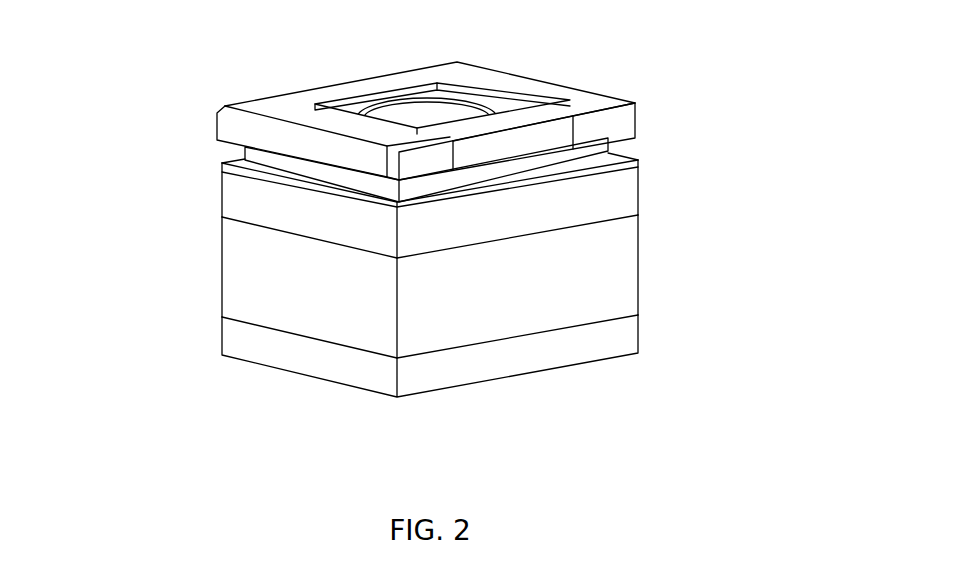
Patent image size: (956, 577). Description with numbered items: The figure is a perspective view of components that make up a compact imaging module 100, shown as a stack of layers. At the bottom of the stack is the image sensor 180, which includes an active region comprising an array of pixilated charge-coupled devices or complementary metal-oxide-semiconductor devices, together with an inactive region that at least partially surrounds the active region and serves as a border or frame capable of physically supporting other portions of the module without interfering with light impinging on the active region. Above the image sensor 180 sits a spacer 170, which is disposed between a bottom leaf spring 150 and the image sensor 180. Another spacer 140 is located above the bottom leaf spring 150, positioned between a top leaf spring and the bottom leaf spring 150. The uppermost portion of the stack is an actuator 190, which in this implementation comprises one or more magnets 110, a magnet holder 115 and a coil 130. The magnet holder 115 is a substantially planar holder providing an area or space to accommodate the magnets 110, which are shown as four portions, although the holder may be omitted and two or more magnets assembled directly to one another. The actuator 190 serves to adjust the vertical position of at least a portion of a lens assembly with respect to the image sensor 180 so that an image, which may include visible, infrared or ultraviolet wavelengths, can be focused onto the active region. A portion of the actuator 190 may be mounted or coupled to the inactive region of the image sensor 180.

The compact imaging module 100 is at (840, 48).
The magnets 110 is at (597, 92).
The magnet holder 115 is at (636, 128).
The coil 130 is at (243, 153).
The spacer 140 is at (639, 193).
The bottom leaf spring 150 is at (222, 217).
The spacer 170 is at (639, 252).
The image sensor 180 is at (642, 327).
The actuator 190 is at (130, 70).